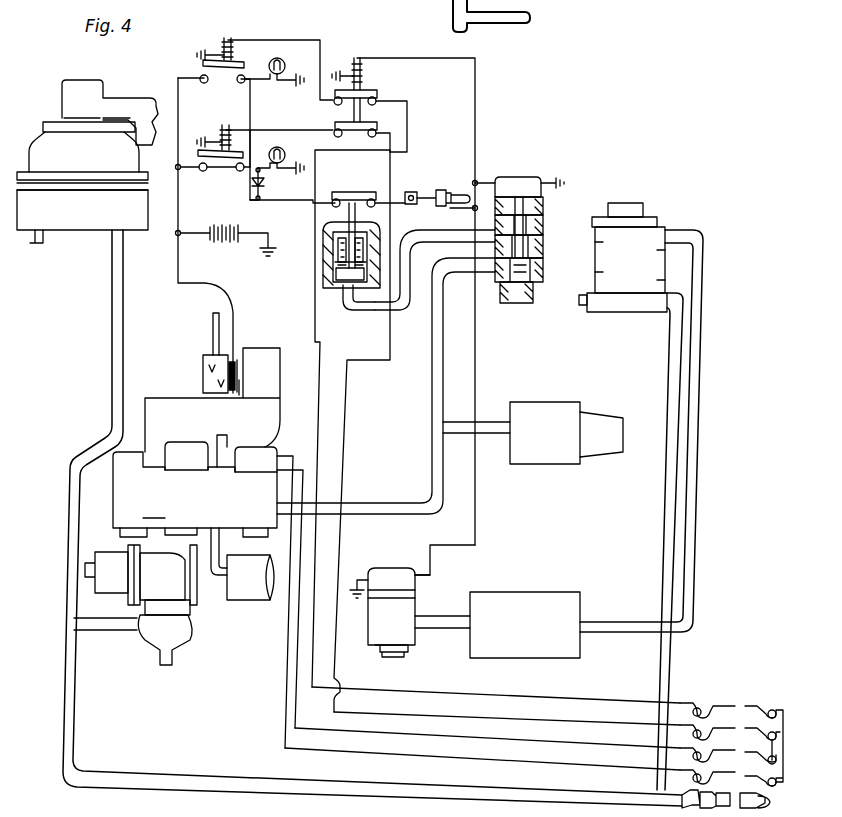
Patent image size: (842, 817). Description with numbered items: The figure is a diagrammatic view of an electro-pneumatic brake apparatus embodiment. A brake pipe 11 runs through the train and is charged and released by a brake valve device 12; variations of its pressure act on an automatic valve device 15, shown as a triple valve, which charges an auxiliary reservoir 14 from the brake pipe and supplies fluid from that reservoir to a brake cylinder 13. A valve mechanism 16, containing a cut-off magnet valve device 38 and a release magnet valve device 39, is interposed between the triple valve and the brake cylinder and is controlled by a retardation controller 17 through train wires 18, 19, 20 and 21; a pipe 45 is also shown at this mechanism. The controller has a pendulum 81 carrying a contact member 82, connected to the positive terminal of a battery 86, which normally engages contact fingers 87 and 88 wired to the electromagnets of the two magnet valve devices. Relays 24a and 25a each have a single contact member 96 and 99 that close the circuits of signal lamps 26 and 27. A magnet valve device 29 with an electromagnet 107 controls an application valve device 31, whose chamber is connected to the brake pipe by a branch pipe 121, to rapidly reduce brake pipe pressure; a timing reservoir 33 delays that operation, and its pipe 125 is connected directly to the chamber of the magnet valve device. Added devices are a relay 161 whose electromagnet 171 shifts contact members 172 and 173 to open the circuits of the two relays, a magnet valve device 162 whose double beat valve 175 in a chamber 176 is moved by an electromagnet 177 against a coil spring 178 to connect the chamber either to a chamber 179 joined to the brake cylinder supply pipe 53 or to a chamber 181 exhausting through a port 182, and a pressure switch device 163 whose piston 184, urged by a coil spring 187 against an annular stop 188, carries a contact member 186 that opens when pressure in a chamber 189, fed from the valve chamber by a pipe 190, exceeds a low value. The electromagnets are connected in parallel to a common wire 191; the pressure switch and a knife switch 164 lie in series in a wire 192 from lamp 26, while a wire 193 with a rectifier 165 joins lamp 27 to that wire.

The brake pipe 11 is at (112, 298).
The brake valve device 12 is at (79, 237).
The brake cylinder 13 is at (553, 395).
The auxiliary reservoir 14 is at (256, 606).
The automatic valve device 15 is at (189, 660).
The valve mechanism 16 is at (195, 473).
The retardation controller 17 is at (213, 327).
The train wire 18 is at (338, 758).
The train wire 19 is at (335, 673).
The train wire 20 is at (338, 737).
The train wire 21 is at (342, 716).
The relay 24a is at (233, 36).
The relay 25a is at (222, 121).
The signal lamp 26 is at (288, 55).
The signal lamp 27 is at (289, 143).
The magnet valve device 29 is at (406, 600).
The application valve device 31 is at (627, 208).
The timing reservoir 33 is at (531, 587).
The cut-off magnet valve device 38 is at (191, 435).
The release magnet valve device 39 is at (271, 446).
The return pipe 45 is at (203, 600).
The brake cylinder supply pipe 53 is at (432, 362).
The pendulum 81 is at (203, 379).
The contact member 82 is at (236, 362).
The battery 86 is at (231, 249).
The contact finger 87 is at (240, 390).
The contact finger 88 is at (238, 368).
The contact member 96 is at (232, 66).
The contact member 99 is at (222, 160).
The electromagnet 107 is at (416, 594).
The branch pipe 121 is at (669, 376).
The pipe 125 is at (700, 377).
The electrical relay 161 is at (361, 50).
The magnet valve device 162 is at (535, 244).
The pressure switch device 163 is at (331, 268).
The knife switch 164 is at (422, 206).
The rectifier 165 is at (262, 182).
The electromagnet 171 is at (362, 70).
The contact member 172 is at (378, 96).
The contact member 173 is at (368, 135).
The double beat valve 175 is at (543, 248).
The chamber 176 is at (543, 229).
The electromagnet 177 is at (552, 181).
The coil spring 178 is at (517, 304).
The chamber 179 is at (543, 270).
The chamber 181 is at (505, 195).
The exhaust port 182 is at (543, 205).
The piston 184 is at (336, 263).
The contact member 186 is at (348, 192).
The coil spring 187 is at (337, 242).
The annular stop 188 is at (336, 272).
The chamber 189 is at (358, 309).
The pipe 190 is at (392, 310).
The common wire 191 is at (462, 535).
The wire 192 is at (251, 112).
The wire 193 is at (249, 199).